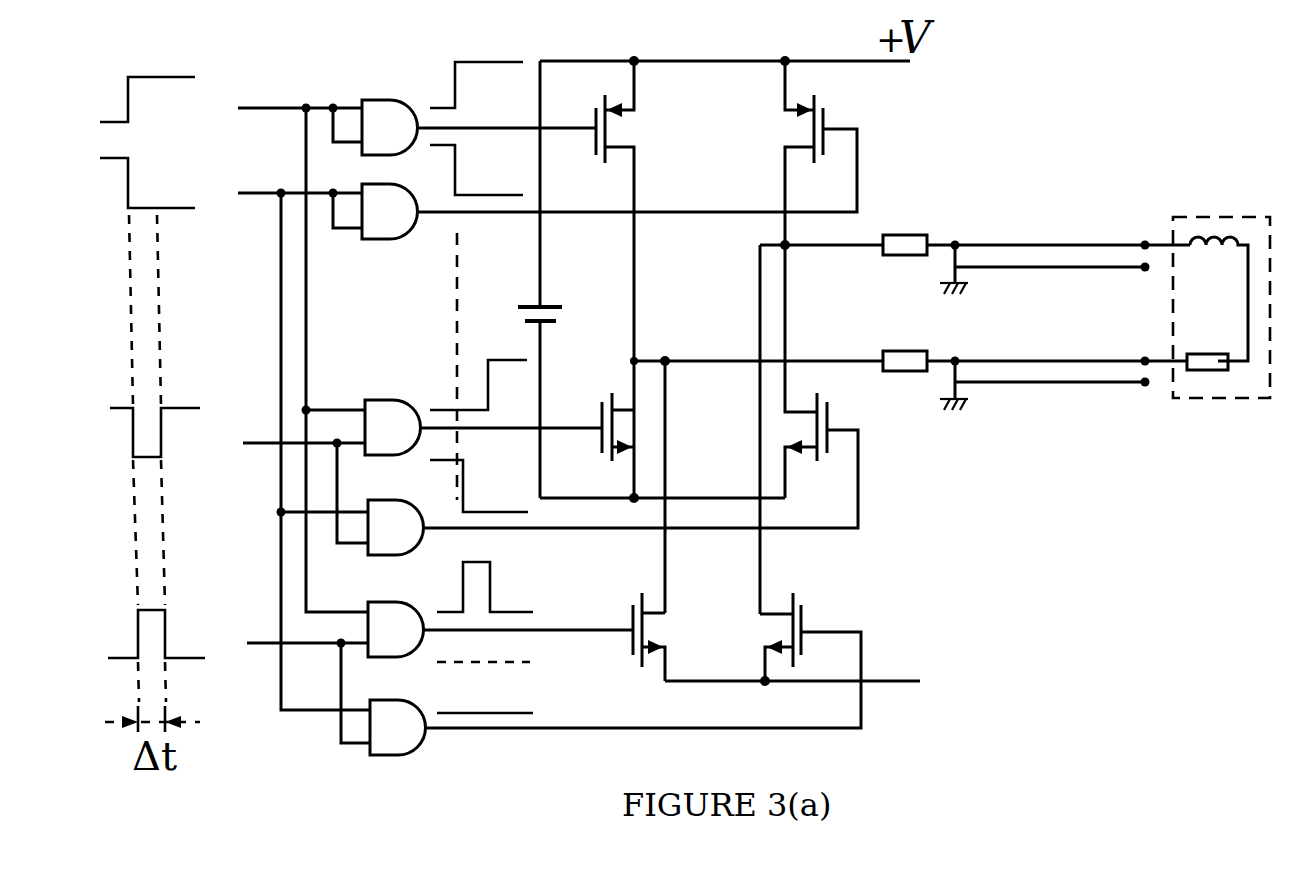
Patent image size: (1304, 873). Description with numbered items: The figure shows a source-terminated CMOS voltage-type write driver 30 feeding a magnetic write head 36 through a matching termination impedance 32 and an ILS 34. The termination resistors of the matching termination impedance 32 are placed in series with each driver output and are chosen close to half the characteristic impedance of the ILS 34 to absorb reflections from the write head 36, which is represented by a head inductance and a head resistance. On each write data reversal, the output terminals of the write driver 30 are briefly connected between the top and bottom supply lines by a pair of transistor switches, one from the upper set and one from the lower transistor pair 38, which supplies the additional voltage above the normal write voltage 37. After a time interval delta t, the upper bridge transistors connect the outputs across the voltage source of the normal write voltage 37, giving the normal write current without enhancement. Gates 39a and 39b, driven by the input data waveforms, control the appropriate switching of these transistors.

The write driver 30 is at (874, 427).
The matching termination impedance 32 is at (878, 259).
The ILS 34 is at (1044, 194).
The write head 36 is at (1204, 194).
The normal write voltage 37 is at (576, 308).
The transistor pair T5, T6 38 is at (882, 617).
The gates 39a is at (393, 327).
The gates 39b is at (397, 678).